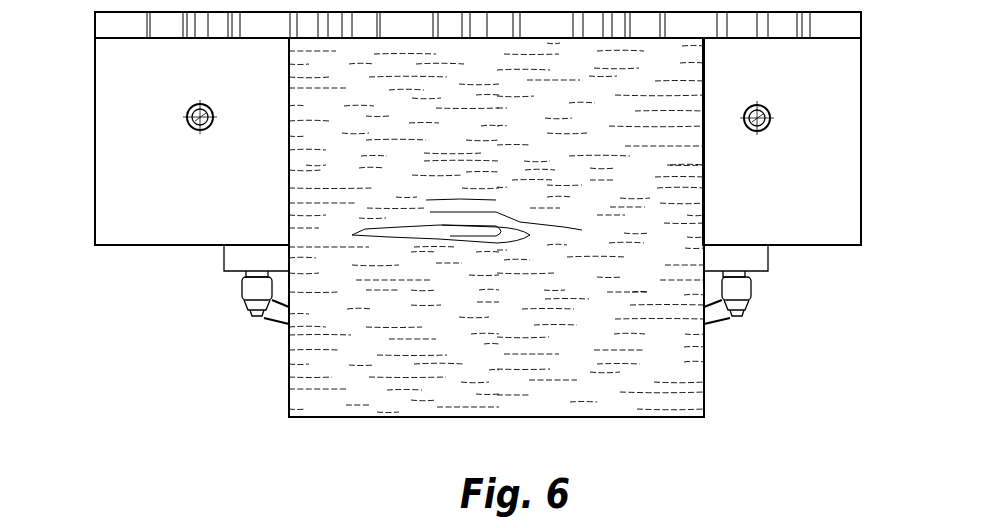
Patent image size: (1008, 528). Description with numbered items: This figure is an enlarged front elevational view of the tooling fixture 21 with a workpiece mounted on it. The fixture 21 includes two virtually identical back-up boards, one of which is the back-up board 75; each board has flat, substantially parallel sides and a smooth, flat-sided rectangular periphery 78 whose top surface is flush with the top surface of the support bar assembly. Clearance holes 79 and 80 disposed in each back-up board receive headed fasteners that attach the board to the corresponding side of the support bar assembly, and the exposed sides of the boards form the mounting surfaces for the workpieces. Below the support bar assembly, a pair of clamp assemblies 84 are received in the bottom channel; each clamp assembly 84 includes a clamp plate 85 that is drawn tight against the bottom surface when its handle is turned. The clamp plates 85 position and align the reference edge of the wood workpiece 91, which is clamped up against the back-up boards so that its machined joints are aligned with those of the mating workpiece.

The fixture 21 is at (189, 326).
The back-up board 75 is at (827, 246).
The rectangular periphery 78 is at (95, 190).
The clearance hole 79 is at (773, 118).
The clearance hole 80 is at (192, 120).
The clamp assembly 84 is at (257, 296).
The clamp plate 85 is at (757, 262).
The workpiece 91 is at (657, 372).